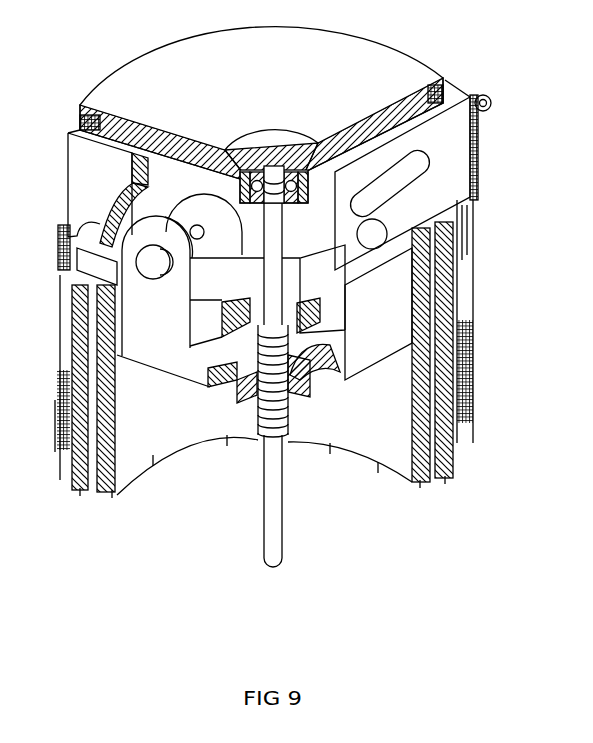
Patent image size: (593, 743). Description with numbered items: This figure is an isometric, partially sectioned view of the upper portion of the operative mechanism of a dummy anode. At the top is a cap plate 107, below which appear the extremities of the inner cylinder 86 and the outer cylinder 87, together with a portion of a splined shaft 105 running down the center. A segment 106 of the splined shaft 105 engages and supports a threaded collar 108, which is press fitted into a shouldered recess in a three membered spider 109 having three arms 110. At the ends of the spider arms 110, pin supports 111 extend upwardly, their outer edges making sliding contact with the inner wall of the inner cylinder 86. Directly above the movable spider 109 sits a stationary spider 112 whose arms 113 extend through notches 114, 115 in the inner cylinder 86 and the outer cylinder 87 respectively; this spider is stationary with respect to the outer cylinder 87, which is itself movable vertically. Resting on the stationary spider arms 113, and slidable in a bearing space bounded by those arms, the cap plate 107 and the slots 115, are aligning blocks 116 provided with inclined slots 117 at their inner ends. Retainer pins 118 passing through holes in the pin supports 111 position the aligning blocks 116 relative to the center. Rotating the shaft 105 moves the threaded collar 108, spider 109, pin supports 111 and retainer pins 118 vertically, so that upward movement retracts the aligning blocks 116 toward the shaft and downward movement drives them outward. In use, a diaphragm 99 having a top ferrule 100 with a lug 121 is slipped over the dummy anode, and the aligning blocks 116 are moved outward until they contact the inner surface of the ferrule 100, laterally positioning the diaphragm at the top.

The inner cylinder 86 is at (247, 434).
The outer cylinder 87 is at (455, 471).
The diaphragm 99 is at (476, 409).
The top ferrule 100 is at (489, 130).
The splined shaft 105 is at (282, 465).
The segment of the splined shaft 106 is at (288, 421).
The cap plate 107 is at (282, 84).
The threaded collar 108 is at (300, 396).
The three membered spider 109 is at (240, 362).
The spider arms 110 is at (221, 388).
The pin supports 111 is at (203, 224).
The stationary spider 112 is at (235, 296).
The stationary spider arms 113 is at (62, 265).
The notches in the inner cylinder 114 is at (150, 183).
The notches in the outer cylinder 115 is at (78, 215).
The aligning blocks 116 is at (103, 177).
The inclined slots 117 is at (413, 178).
The retainer pins 118 is at (390, 220).
The lug 121 is at (492, 103).